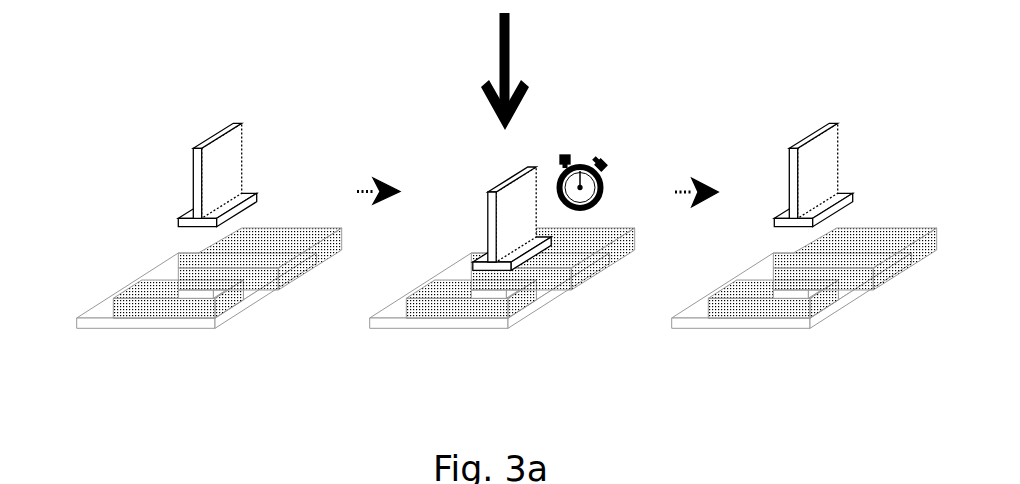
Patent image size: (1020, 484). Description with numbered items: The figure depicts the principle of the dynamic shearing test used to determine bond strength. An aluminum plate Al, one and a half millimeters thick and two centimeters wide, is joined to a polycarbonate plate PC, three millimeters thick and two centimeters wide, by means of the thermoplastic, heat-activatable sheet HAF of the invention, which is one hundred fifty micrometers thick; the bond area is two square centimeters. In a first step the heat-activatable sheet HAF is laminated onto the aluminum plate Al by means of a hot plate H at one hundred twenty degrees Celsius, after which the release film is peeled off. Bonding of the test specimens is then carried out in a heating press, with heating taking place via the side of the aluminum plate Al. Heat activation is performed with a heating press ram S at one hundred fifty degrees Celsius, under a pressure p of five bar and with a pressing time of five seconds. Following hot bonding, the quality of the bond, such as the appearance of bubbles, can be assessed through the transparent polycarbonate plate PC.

The heating press ram S is at (227, 157).
The aluminum plate Al is at (265, 238).
The hot plate H is at (97, 322).
The polycarbonate plate PC is at (143, 307).
The heat-activatable sheet HAF is at (193, 293).
The pressure p is at (499, 71).